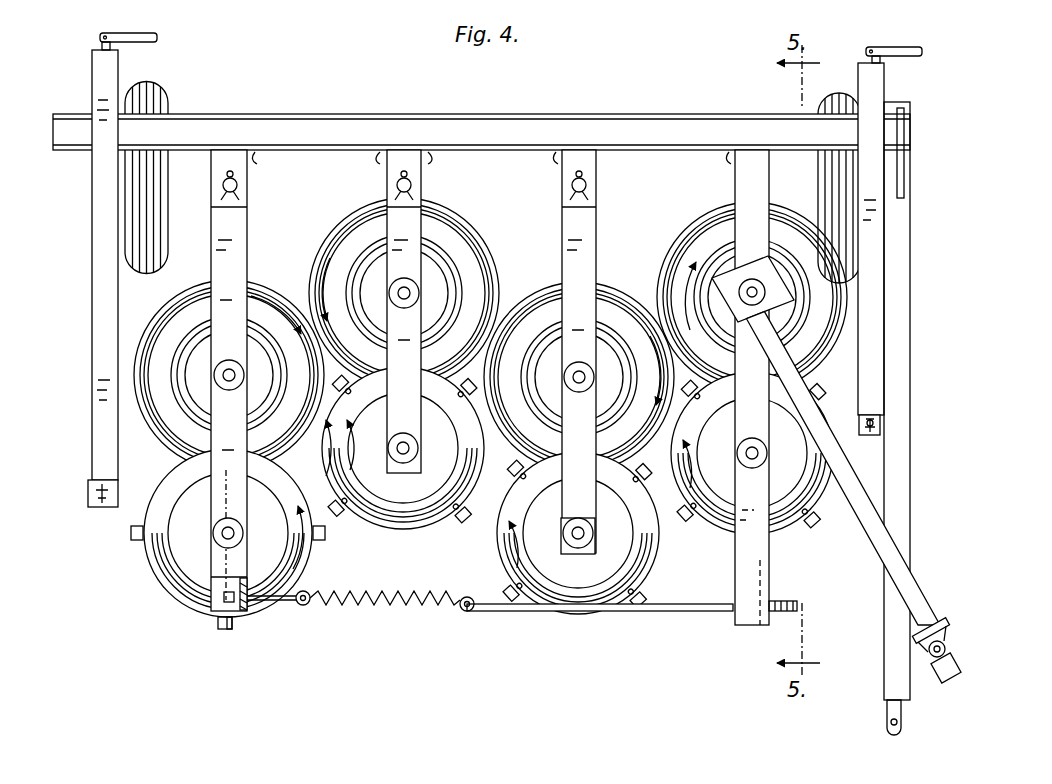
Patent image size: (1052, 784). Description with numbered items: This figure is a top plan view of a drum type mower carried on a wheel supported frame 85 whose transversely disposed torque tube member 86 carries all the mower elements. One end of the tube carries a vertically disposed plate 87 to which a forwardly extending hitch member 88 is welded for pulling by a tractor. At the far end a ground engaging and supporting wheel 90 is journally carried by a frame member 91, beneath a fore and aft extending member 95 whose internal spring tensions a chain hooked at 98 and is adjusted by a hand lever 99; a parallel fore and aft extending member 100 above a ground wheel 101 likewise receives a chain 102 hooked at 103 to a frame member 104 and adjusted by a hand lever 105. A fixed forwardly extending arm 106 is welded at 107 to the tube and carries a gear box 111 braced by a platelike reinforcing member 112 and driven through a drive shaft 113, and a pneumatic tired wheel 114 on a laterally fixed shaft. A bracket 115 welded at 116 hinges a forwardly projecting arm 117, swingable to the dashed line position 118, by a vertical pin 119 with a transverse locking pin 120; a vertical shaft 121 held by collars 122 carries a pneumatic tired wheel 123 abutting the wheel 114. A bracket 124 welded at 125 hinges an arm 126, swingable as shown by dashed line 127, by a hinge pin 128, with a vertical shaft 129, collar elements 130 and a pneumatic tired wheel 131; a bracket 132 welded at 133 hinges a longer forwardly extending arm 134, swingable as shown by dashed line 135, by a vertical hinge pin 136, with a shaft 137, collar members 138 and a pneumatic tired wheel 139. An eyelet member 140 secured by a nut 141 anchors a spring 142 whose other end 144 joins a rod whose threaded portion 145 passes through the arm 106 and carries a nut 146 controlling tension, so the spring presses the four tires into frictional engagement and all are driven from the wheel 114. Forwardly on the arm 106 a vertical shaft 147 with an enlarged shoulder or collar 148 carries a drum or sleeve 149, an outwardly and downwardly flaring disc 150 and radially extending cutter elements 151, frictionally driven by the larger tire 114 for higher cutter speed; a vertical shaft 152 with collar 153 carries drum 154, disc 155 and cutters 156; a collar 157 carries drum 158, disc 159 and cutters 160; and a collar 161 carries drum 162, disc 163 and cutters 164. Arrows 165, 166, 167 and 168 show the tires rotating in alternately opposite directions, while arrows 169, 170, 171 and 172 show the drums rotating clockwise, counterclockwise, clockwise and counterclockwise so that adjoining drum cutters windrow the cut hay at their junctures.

The wheel supported frame 85 is at (523, 112).
The torque tube member 86 is at (637, 118).
The vertically disposed plate 87 is at (904, 178).
The hitch member 88 is at (902, 492).
The ground engaging and supporting wheel 90 is at (168, 93).
The frame member 91 is at (107, 508).
The fore and aft extending member 95 is at (90, 378).
The hook point 98 is at (95, 503).
The hand lever 99 is at (126, 33).
The fore and aft extending member 100 is at (893, 343).
The ground wheel 101 is at (840, 95).
The chain 102 is at (868, 417).
The hook point 103 is at (672, 612).
The frame member 104 is at (880, 424).
The hand lever 105 is at (895, 47).
The fixed forwardly extending arm 106 is at (762, 590).
The weld 107 is at (732, 158).
The gear box 111 is at (772, 262).
The platelike reinforcing member 112 is at (749, 160).
The drive shaft 113 is at (878, 553).
The pneumatic tired wheel 114 is at (826, 346).
The bracket 115 is at (581, 160).
The weld 116 is at (558, 156).
The forwardly projecting arm 117 is at (597, 232).
The dashed line position 118 is at (600, 420).
The vertical pin 119 is at (590, 185).
The transverse locking pin 120 is at (566, 205).
The vertical shaft 121 is at (594, 379).
The collars 122 is at (564, 377).
The pneumatic tired wheel 123 is at (536, 300).
The bracket 124 is at (380, 152).
The weld 125 is at (430, 152).
The arm 126 is at (392, 215).
The dashed line 127 is at (430, 288).
The hinge pin 128 is at (414, 185).
The vertical shaft 129 is at (418, 302).
The collar elements 130 is at (416, 262).
The pneumatic tired wheel 131 is at (386, 404).
The bracket 132 is at (240, 190).
The weld 133 is at (262, 152).
The forwardly extending arm 134 is at (222, 232).
The dashed line 135 is at (270, 610).
The vertical hinge pin 136 is at (223, 185).
The shaft 137 is at (246, 381).
The collar members 138 is at (215, 368).
The pneumatic tired wheel 139 is at (168, 437).
The eyelet member 140 is at (300, 605).
The nut 141 is at (245, 614).
The spring 142 is at (410, 606).
The rod end 144 is at (465, 612).
The threaded portion 145 is at (715, 612).
The nut 146 is at (771, 618).
The vertical shaft 147 is at (753, 465).
The enlarged shoulder or collar 148 is at (768, 454).
The drum or sleeve 149 is at (790, 515).
The outwardly and downwardly flaring disc 150 is at (768, 535).
The radially extending cutter elements 151 is at (710, 535).
The vertical shaft 152 is at (582, 555).
The enlarged shoulder or collar 153 is at (563, 533).
The drum or sleeve 154 is at (573, 590).
The outwardly and downwardly flaring disc 155 is at (640, 565).
The radially extending cutter elements 156 is at (503, 600).
The enlarged shoulder or collar 157 is at (418, 450).
The drum or sleeve 158 is at (398, 525).
The outwardly and downwardly flaring disc 159 is at (332, 466).
The radially extending cutter elements 160 is at (455, 520).
The enlarged shoulder or collar 161 is at (216, 540).
The drum or sleeve 162 is at (290, 558).
The outwardly and downwardly flaring disc 163 is at (188, 605).
The radially extending cutter elements 164 is at (222, 630).
The arrow 165 is at (677, 296).
The arrow 166 is at (635, 310).
The arrow 167 is at (338, 282).
The arrow 168 is at (283, 292).
The arrow 169 is at (683, 458).
The arrow 170 is at (642, 532).
The arrow 171 is at (364, 445).
The arrow 172 is at (300, 536).